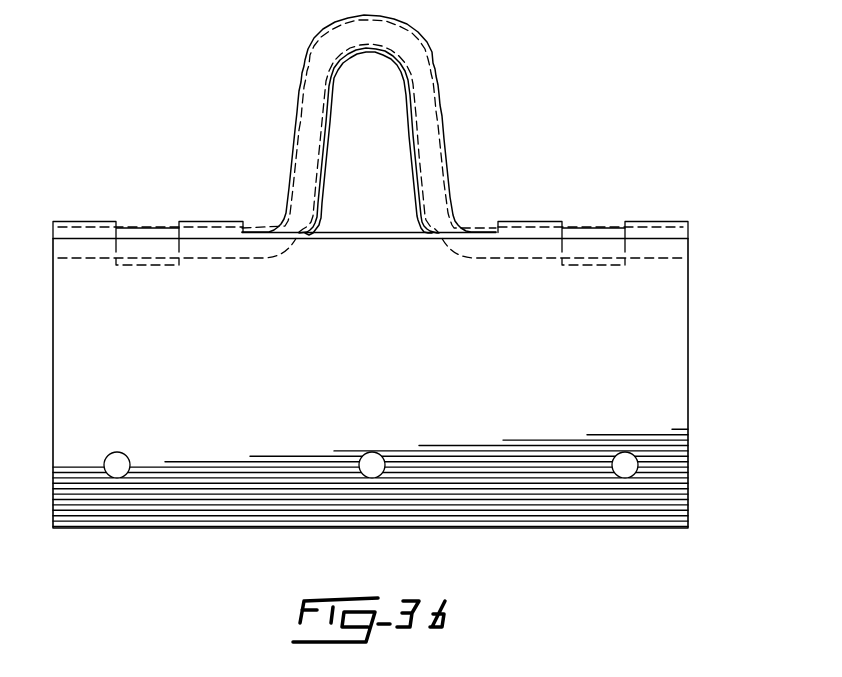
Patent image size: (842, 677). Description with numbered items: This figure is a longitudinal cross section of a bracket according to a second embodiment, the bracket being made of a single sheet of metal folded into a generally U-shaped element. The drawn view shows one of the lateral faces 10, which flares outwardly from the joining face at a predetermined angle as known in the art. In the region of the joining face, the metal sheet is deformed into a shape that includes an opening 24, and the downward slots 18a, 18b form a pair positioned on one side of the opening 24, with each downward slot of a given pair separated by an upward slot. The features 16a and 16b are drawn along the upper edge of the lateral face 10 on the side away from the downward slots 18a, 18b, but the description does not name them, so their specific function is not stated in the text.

The lateral face 10 is at (585, 378).
The first tab 16a is at (90, 221).
The second tab 16b is at (212, 221).
The downward slot 18a is at (530, 221).
The downward slot 18b is at (657, 221).
The opening 24 is at (370, 233).